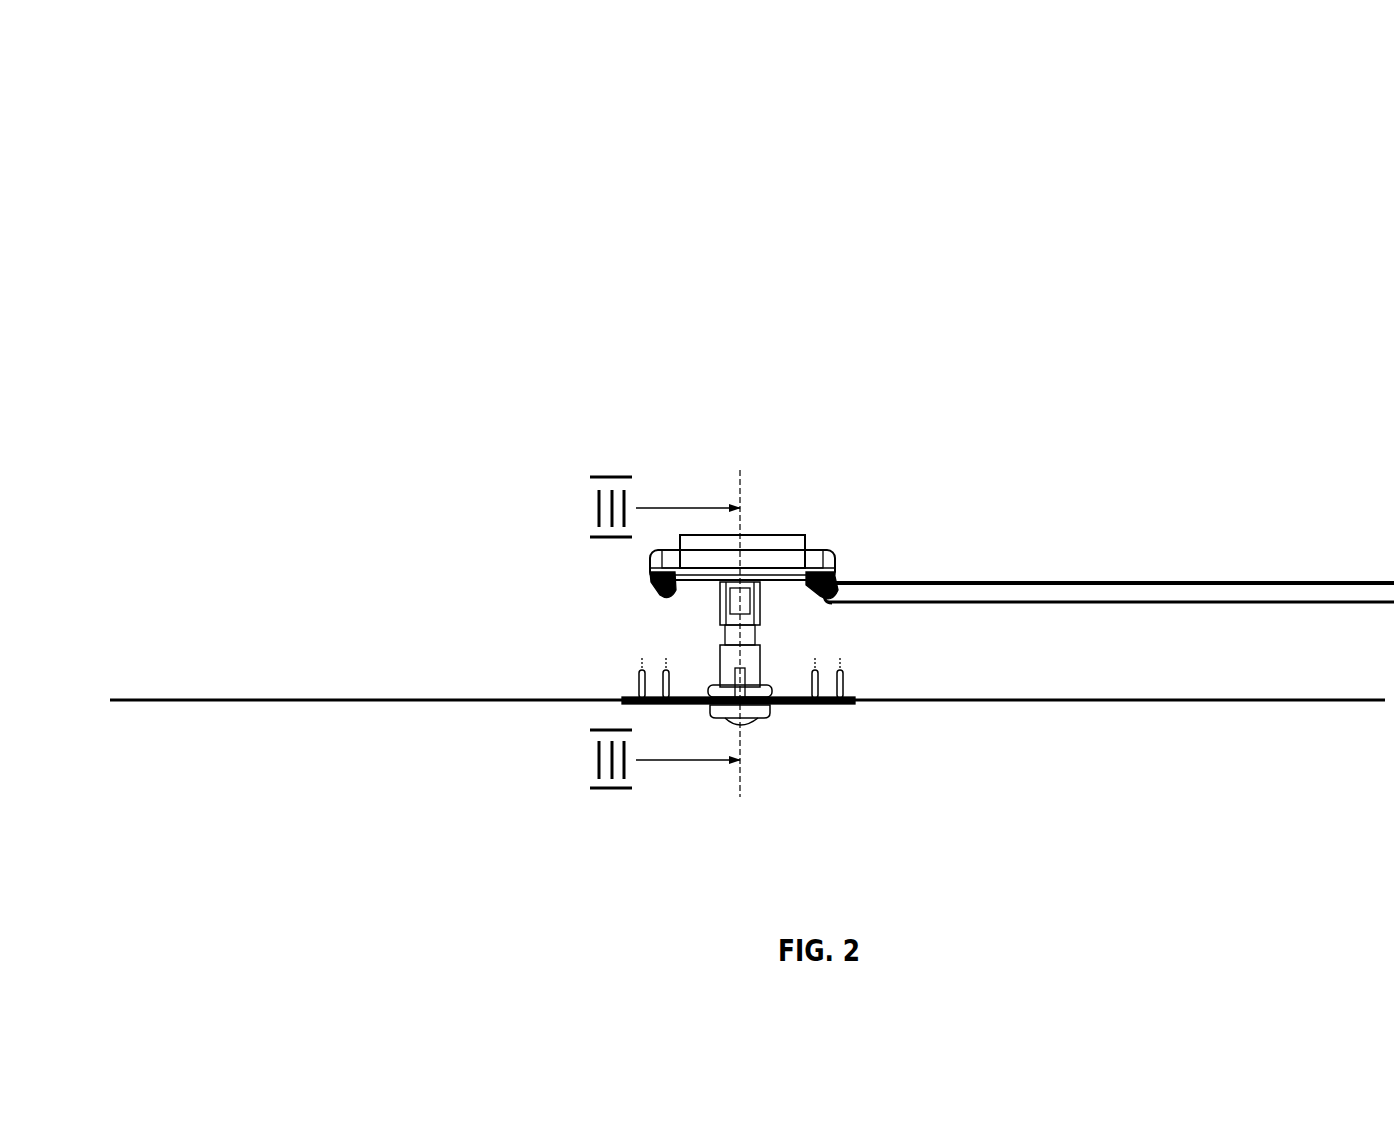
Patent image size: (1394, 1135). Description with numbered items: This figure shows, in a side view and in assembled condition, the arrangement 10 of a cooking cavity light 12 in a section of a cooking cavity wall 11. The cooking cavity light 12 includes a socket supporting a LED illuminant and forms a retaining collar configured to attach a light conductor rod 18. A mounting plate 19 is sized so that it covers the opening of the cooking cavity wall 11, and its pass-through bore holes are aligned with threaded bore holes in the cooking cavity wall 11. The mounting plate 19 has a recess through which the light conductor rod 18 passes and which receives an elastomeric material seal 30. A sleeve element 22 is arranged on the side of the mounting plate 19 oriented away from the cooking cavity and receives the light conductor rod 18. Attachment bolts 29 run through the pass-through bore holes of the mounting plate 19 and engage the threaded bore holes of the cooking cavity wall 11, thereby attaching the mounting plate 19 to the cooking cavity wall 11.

The arrangement 10 is at (1113, 236).
The cooking cavity wall 11 is at (178, 697).
The cooking cavity light 12 is at (768, 525).
The light conductor rod 18 is at (722, 632).
The sleeve element 22 is at (711, 671).
The mounting plate 19 is at (797, 708).
The attachment bolts 29 is at (820, 663).
The elastomeric material seal 30 is at (765, 720).